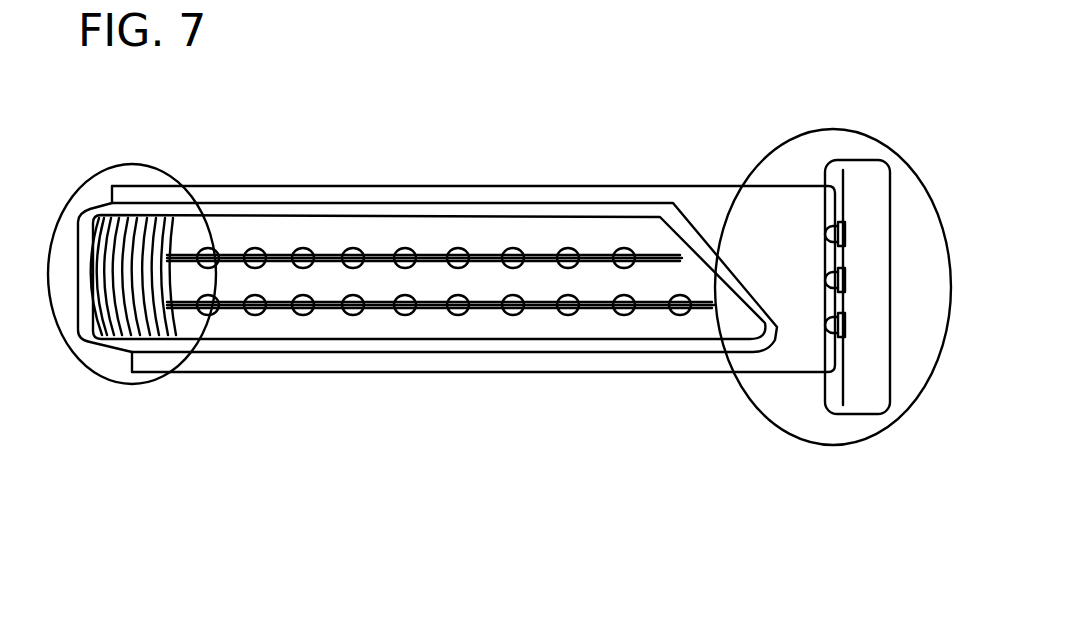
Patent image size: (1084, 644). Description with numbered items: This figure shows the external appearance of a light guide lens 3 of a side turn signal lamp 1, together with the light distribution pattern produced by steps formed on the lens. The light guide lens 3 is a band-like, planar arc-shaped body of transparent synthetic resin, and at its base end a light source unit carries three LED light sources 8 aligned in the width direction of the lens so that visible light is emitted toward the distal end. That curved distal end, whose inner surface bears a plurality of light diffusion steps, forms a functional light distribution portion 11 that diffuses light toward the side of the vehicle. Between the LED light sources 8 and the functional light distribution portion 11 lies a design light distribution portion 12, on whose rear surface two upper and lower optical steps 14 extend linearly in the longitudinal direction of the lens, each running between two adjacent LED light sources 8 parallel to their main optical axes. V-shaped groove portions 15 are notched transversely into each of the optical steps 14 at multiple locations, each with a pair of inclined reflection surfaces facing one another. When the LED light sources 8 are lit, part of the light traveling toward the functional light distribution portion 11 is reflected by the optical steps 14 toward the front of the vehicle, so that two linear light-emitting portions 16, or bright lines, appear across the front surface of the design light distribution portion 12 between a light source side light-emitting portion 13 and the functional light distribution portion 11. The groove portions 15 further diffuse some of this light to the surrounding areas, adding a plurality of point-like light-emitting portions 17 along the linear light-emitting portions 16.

The side turn signal lamp 1 is at (281, 178).
The light guide lens 3 is at (626, 186).
The LED light sources 8 is at (832, 277).
The functional light distribution portion 11 is at (136, 384).
The design light distribution portion 12 is at (441, 318).
The light source side light-emitting portion 13 is at (830, 445).
The optical steps 14 is at (388, 258).
The groove portions 15 is at (458, 257).
The linear light-emitting portions 16 is at (389, 330).
The point-like light-emitting portions 17 is at (444, 362).